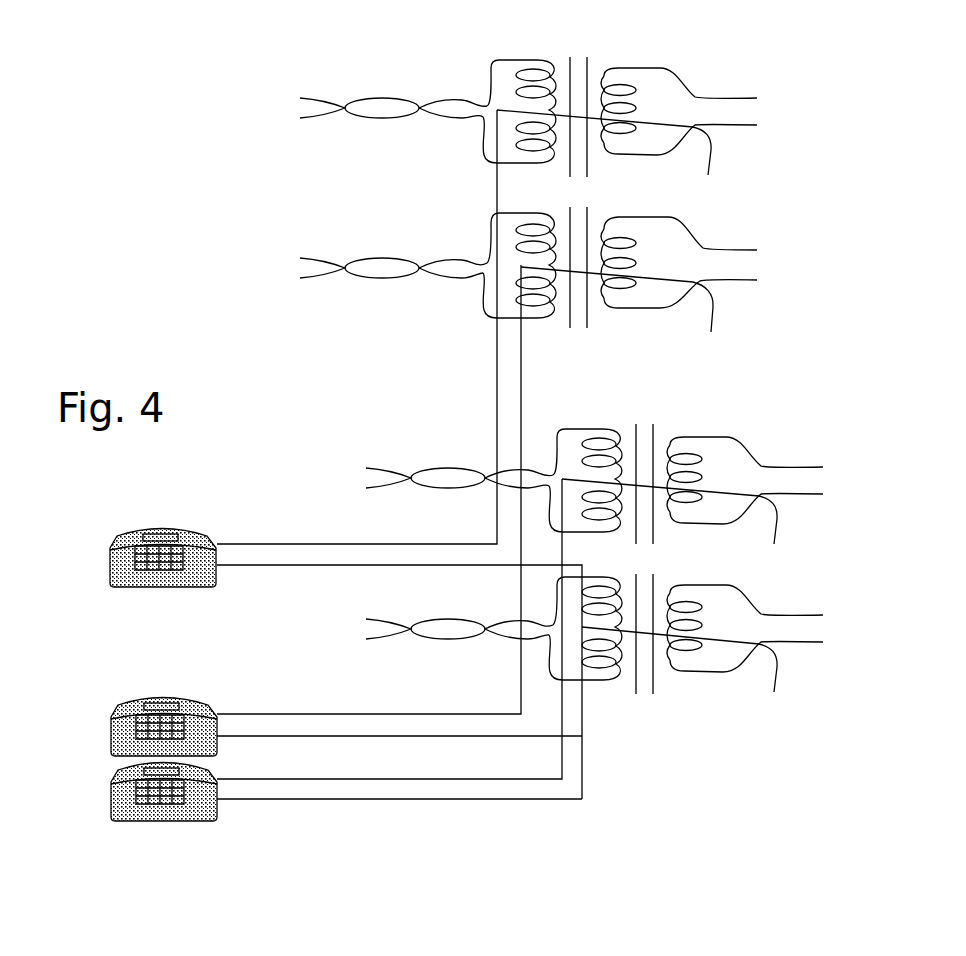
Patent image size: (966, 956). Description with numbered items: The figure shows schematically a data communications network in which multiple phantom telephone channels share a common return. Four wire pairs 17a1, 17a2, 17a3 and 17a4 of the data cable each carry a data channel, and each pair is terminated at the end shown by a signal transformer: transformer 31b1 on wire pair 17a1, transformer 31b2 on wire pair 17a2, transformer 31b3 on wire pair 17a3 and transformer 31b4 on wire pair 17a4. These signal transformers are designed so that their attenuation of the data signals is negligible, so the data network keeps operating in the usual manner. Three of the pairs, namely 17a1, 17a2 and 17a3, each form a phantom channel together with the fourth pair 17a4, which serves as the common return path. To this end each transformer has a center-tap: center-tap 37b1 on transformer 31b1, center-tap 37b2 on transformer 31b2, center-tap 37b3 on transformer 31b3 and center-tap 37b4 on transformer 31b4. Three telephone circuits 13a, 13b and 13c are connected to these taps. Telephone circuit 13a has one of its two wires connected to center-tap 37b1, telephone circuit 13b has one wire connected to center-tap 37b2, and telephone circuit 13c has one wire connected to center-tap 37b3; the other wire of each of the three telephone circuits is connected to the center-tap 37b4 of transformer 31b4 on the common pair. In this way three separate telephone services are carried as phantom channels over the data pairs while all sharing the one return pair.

The telephone circuit 13a is at (110, 568).
The telephone circuit 13b is at (112, 738).
The telephone circuit 13c is at (112, 803).
The wire pair 17a1 is at (369, 112).
The wire pair 17a2 is at (428, 268).
The wire pair 17a3 is at (435, 481).
The wire pair 17a4 is at (497, 632).
The transformer 31b1 is at (569, 70).
The transformer 31b2 is at (588, 315).
The transformer 31b3 is at (636, 438).
The transformer 31b4 is at (650, 675).
The center-tap 37b1 is at (627, 136).
The center-tap 37b2 is at (639, 287).
The center-tap 37b3 is at (692, 504).
The center-tap 37b4 is at (702, 652).